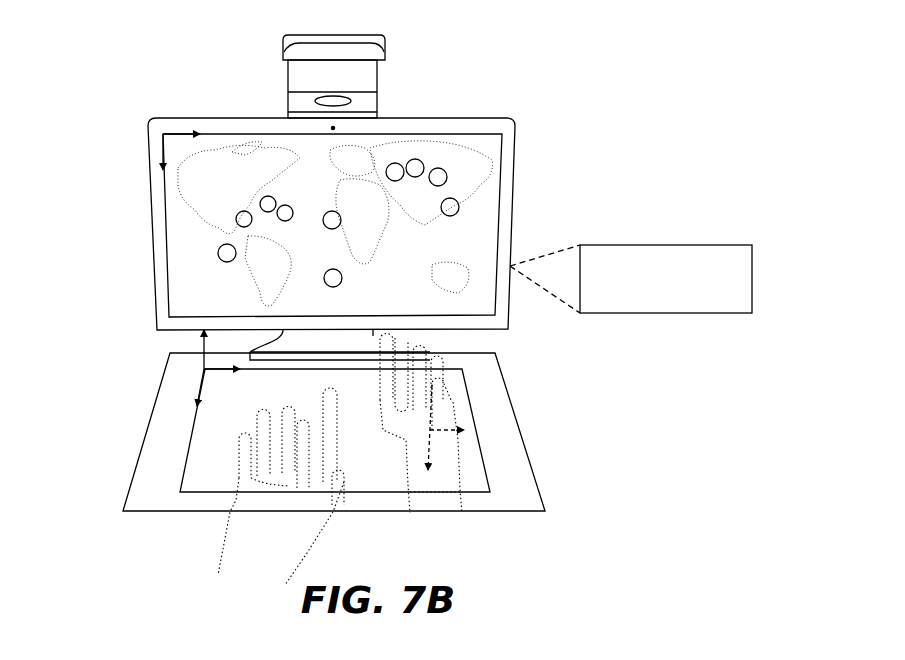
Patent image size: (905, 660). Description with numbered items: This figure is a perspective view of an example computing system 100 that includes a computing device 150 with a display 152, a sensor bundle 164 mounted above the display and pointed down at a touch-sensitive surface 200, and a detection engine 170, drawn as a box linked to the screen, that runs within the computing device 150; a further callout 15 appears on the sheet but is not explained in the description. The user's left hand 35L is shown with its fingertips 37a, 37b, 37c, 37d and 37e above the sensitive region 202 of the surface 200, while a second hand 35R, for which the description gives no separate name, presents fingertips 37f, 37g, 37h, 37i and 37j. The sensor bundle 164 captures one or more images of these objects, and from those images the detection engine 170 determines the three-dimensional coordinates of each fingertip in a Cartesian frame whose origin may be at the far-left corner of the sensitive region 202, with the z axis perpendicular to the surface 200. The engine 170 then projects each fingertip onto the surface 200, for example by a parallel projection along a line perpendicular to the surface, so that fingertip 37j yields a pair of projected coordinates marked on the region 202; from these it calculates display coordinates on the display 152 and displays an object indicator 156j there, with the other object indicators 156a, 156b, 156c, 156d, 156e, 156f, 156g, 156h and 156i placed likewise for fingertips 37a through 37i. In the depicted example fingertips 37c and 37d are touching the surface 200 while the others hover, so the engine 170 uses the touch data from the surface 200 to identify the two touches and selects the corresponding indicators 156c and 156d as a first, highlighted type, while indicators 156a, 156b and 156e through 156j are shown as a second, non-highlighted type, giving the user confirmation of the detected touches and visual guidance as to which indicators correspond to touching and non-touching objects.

The computing system 15 is at (682, 440).
The computing system 100 is at (636, 147).
The computing device 150 is at (519, 152).
The display 152 is at (172, 223).
The object indicator 156a is at (216, 263).
The object indicator 156b is at (224, 219).
The object indicator 156c is at (258, 196).
The object indicator 156d is at (291, 222).
The object indicator 156e is at (338, 288).
The object indicator 156f is at (347, 227).
The object indicator 156g is at (384, 181).
The object indicator 156h is at (417, 160).
The object indicator 156i is at (455, 177).
The object indicator 156j is at (457, 217).
The sensor bundle 164 is at (327, 52).
The detection engine 170 is at (666, 313).
The touch-sensitive surface 200 is at (515, 498).
The sensitive region 202 is at (484, 477).
The left hand 35L is at (277, 480).
The right hand 35R is at (420, 433).
The fingertip 37a is at (238, 438).
The fingertip 37b is at (260, 412).
The fingertip 37c is at (294, 410).
The fingertip 37d is at (303, 422).
The fingertip 37e is at (334, 479).
The fingertip 37f is at (332, 391).
The fingertip 37g is at (382, 337).
The fingertip 37h is at (425, 348).
The fingertip 37i is at (446, 358).
The fingertip 37j is at (436, 378).